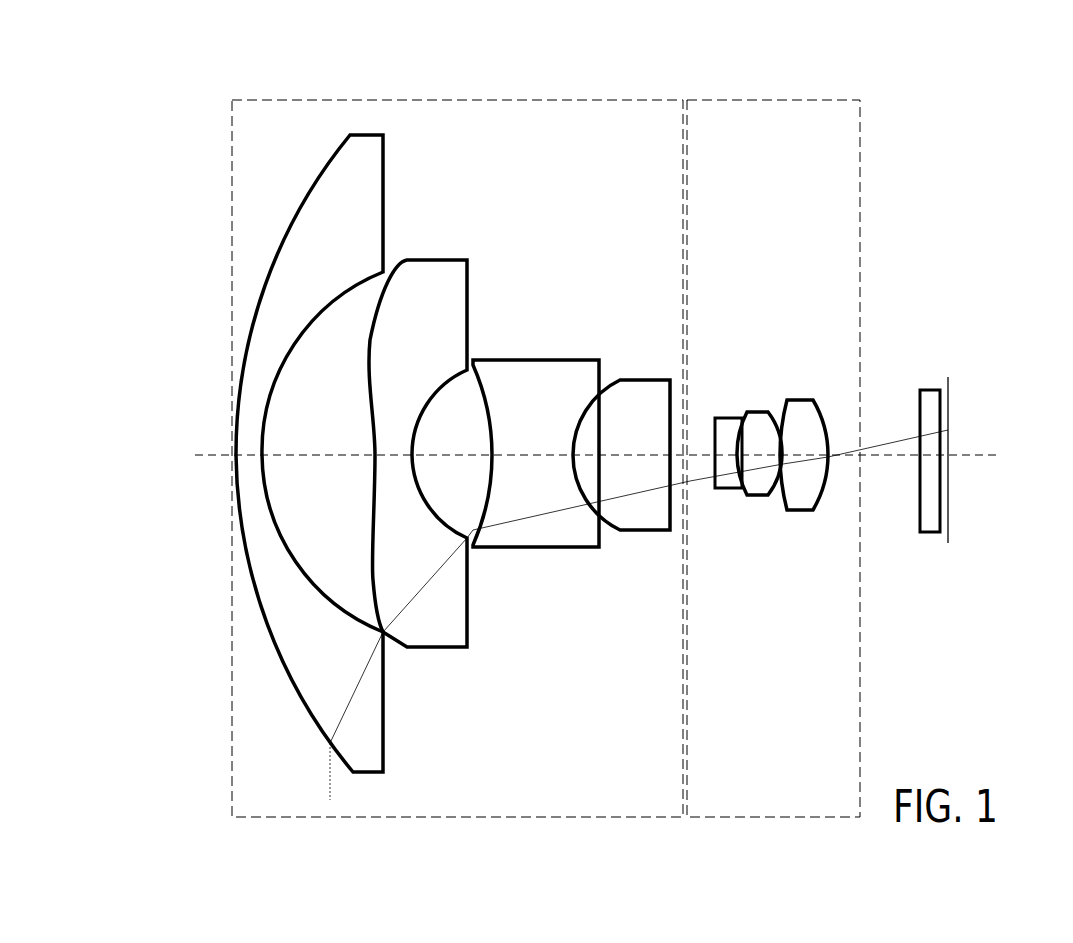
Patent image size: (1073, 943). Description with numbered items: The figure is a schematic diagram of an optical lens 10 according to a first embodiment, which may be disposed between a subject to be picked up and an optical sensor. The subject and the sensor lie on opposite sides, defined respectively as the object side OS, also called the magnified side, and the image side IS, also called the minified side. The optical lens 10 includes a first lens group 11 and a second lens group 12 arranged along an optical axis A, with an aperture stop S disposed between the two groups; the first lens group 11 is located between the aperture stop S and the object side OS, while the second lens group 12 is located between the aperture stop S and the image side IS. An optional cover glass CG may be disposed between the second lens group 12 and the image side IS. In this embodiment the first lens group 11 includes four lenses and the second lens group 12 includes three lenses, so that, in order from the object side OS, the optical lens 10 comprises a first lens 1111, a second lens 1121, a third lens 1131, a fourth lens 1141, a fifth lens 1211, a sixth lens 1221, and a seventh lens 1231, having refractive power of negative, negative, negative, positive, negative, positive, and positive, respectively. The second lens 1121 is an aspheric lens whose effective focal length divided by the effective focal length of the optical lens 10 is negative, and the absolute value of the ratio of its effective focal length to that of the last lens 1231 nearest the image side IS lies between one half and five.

The optical lens 10 is at (906, 205).
The first lens group 11 is at (400, 100).
The second lens group 12 is at (763, 100).
The first lens 1111 is at (385, 157).
The second lens 1121 is at (461, 260).
The third lens 1131 is at (583, 360).
The fourth lens 1141 is at (656, 380).
The fifth lens 1211 is at (721, 418).
The aperture stop S is at (716, 488).
The sixth lens 1221 is at (758, 495).
The seventh lens 1231 is at (812, 400).
The cover glass CG is at (930, 390).
The image side IS is at (989, 460).
The optical axis A is at (975, 457).
The object side OS is at (577, 453).